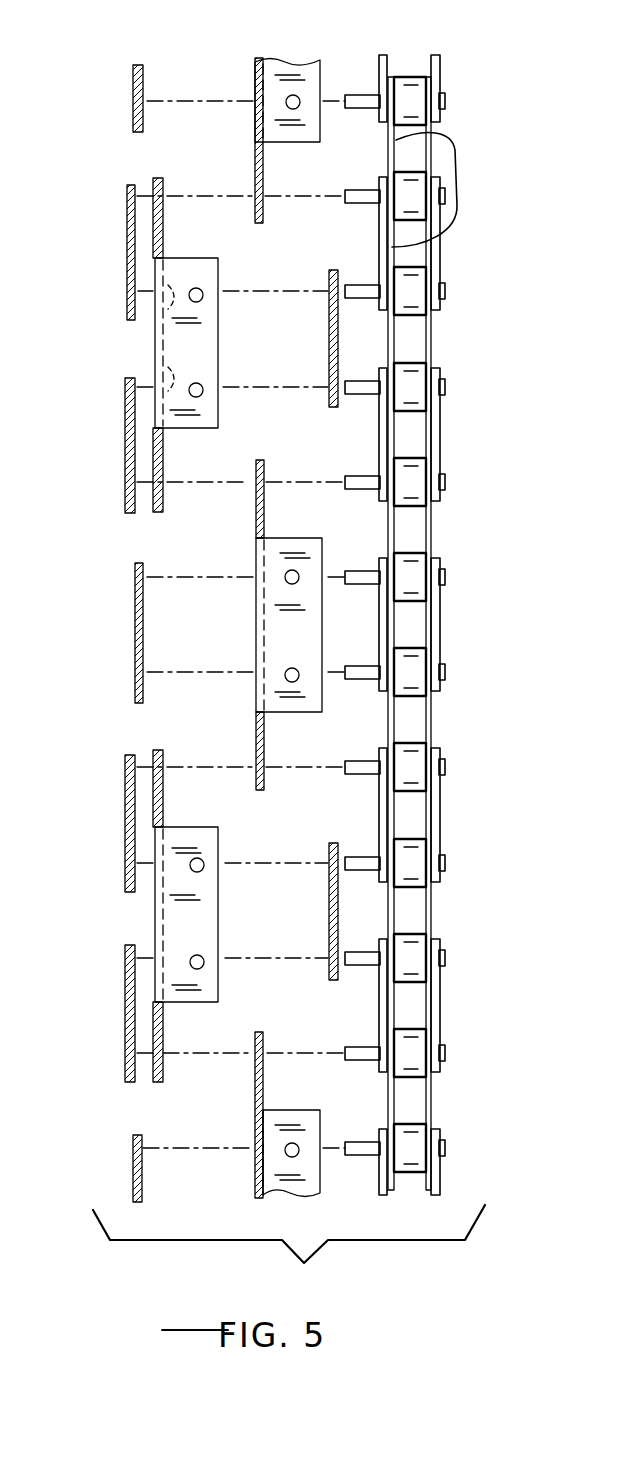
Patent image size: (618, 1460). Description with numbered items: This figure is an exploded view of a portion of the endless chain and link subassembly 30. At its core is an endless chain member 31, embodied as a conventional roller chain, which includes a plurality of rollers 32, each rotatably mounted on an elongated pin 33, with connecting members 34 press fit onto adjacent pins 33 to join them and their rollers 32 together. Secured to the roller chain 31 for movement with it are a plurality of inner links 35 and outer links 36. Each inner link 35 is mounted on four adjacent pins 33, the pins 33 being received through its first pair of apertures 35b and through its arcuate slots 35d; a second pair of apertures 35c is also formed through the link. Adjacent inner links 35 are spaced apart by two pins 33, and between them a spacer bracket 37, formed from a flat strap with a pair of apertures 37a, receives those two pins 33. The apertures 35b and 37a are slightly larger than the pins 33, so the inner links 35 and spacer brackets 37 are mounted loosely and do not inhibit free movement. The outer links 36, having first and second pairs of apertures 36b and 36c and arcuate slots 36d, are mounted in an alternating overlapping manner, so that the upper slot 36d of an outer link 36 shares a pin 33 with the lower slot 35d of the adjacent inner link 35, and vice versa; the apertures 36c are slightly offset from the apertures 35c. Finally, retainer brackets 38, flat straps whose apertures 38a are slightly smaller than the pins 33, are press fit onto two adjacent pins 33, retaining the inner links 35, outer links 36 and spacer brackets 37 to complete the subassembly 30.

The endless chain and link subassembly 30 is at (172, 58).
The endless chain member 31 is at (414, 58).
The roller 32 is at (414, 110).
The elongated pin 33 is at (360, 189).
The connecting member 34 is at (457, 157).
The inner link 35 is at (275, 137).
The first pair of apertures 35b is at (250, 97).
The second pair of apertures 35c is at (290, 572).
The arcuate slot 35d is at (252, 202).
The outer link 36 is at (187, 270).
The first pair of apertures 36b is at (153, 340).
The second pair of apertures 36c is at (202, 289).
The arcuate slot 36d is at (160, 185).
The spacer bracket 37 is at (328, 333).
The aperture 37a is at (328, 293).
The retainer bracket 38 is at (125, 256).
The aperture 38a is at (125, 197).